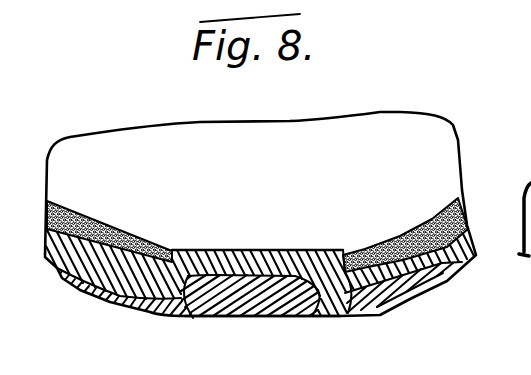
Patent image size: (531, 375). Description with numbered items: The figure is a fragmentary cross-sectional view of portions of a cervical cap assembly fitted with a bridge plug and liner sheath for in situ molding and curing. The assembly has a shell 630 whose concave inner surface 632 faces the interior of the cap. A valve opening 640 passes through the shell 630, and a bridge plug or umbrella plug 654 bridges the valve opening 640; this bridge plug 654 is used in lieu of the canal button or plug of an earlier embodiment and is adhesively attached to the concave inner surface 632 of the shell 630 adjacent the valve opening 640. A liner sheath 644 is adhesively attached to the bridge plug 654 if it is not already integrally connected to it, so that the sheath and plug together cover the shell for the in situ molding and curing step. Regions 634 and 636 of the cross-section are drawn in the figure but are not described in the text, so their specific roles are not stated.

The shell 630 is at (475, 262).
The concave inner surface 632 is at (366, 262).
The bottom layer 634 is at (252, 317).
The edge strip 636 is at (388, 282).
The valve opening 640 is at (190, 316).
The liner sheath 644 is at (83, 217).
The bridge plug 654 is at (264, 250).